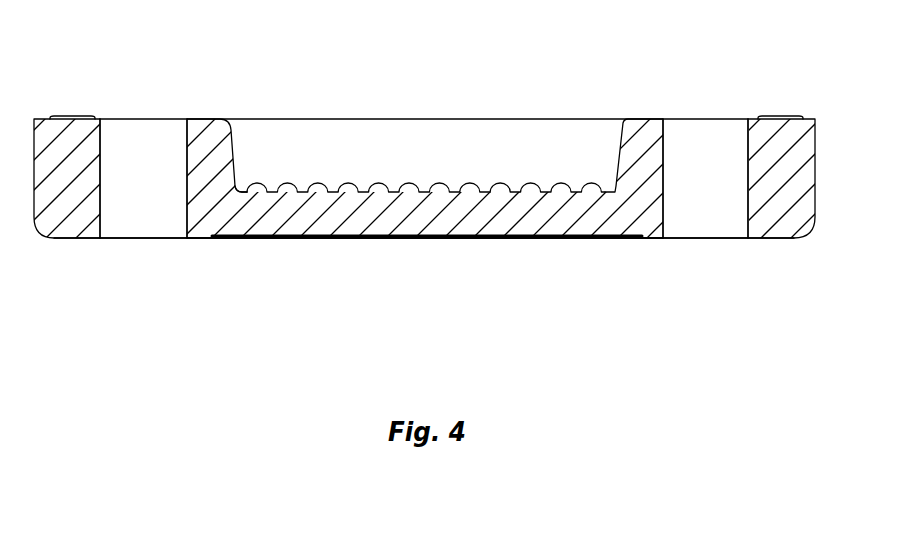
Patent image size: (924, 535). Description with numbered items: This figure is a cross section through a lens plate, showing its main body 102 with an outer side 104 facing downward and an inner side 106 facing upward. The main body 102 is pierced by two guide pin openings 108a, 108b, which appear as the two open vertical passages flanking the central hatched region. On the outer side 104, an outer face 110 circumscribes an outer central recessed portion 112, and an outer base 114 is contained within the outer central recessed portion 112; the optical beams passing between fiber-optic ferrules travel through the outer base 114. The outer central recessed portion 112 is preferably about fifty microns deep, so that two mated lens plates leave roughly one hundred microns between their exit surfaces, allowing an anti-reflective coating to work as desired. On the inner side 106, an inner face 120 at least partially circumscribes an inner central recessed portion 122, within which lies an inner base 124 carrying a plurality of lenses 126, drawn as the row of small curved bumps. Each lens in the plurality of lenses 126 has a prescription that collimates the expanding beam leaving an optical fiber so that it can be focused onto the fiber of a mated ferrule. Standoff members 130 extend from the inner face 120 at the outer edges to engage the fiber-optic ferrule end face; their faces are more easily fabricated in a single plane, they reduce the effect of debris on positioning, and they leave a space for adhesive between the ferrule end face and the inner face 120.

The main body 102 is at (817, 167).
The outer side 104 is at (283, 249).
The inner side 106 is at (663, 96).
The guide pin opening 108a is at (706, 228).
The guide pin opening 108b is at (142, 228).
The outer face 110 is at (656, 240).
The outer central recessed portion 112 is at (620, 240).
The outer base 114 is at (570, 240).
The inner face 120 is at (201, 116).
The inner central recessed portion 122 is at (409, 148).
The inner base 124 is at (242, 188).
The plurality of lenses 126 is at (298, 183).
The standoff members 130 is at (70, 116).